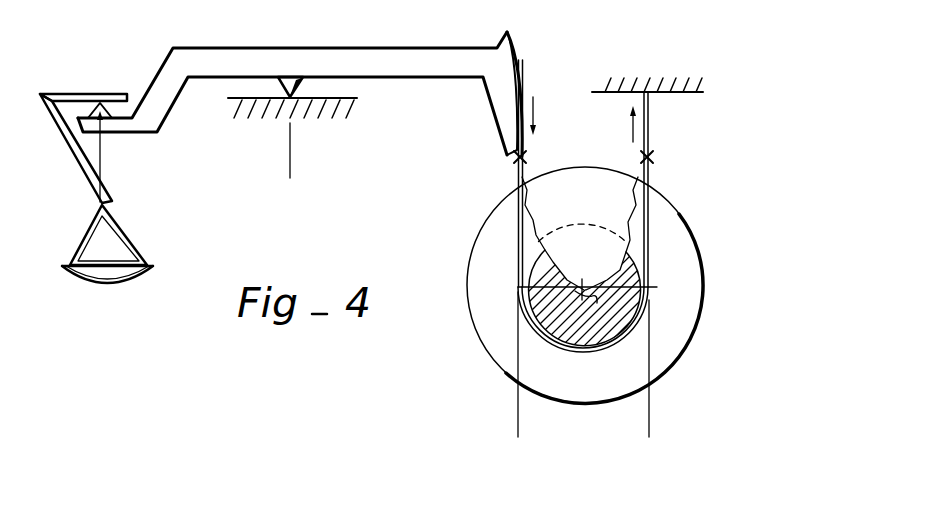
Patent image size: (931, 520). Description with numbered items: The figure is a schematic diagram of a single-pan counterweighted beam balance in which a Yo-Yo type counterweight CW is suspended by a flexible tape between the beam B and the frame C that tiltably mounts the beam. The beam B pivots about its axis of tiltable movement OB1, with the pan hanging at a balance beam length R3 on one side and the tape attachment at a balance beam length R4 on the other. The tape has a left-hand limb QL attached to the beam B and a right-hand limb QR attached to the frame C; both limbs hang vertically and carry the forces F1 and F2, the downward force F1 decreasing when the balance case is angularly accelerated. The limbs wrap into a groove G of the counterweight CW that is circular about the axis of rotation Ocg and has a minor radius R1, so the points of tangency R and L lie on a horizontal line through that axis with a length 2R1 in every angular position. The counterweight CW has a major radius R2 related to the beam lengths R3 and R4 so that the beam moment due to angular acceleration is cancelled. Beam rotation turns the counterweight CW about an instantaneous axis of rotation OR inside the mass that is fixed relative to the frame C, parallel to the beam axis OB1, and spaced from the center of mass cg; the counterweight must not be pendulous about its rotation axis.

The beam B is at (414, 57).
The axis of tiltable movement of the beam OB1 is at (290, 97).
The balance beam length R3 is at (290, 171).
The balance beam length R4 is at (517, 170).
The force F1 is at (543, 116).
The left-hand limb of the tape QL is at (526, 178).
The point of tangency L is at (518, 287).
The frame C is at (623, 93).
The force F2 is at (621, 135).
The right-hand limb of the tape QR is at (648, 136).
The counterweight CW is at (688, 217).
The major radius R2 is at (582, 287).
The groove G is at (542, 248).
The minor radius R1 is at (613, 233).
The instantaneous axis of rotation OR is at (650, 287).
The point of tangency R is at (650, 298).
The axis of rotation of the counterweight Ocg is at (580, 292).
The center of mass cg is at (586, 290).
The length of horizontal line between points of tangency 2R1 is at (528, 427).